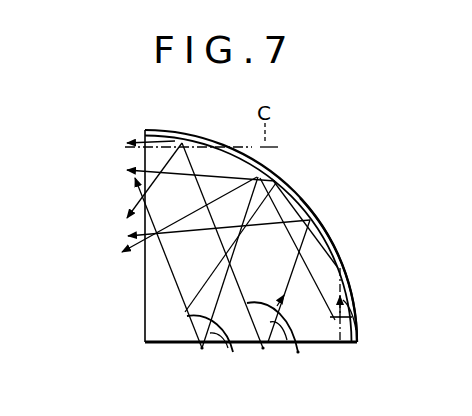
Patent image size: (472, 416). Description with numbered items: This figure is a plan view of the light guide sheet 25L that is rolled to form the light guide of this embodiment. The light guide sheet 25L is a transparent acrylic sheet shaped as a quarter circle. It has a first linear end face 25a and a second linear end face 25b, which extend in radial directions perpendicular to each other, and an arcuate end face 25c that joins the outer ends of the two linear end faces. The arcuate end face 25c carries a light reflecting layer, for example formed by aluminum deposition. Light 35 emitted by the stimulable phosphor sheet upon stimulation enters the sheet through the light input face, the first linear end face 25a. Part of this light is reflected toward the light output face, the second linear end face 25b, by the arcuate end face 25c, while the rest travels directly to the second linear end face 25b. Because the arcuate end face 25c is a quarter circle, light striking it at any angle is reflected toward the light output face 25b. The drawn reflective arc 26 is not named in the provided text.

The reflective mirror surface 26 is at (305, 201).
The arcuate end face 25c is at (342, 264).
The light guide sheet 25L is at (130, 328).
The first linear end face 25a is at (185, 343).
The second linear end face 25b is at (132, 164).
The light 35 is at (385, 348).